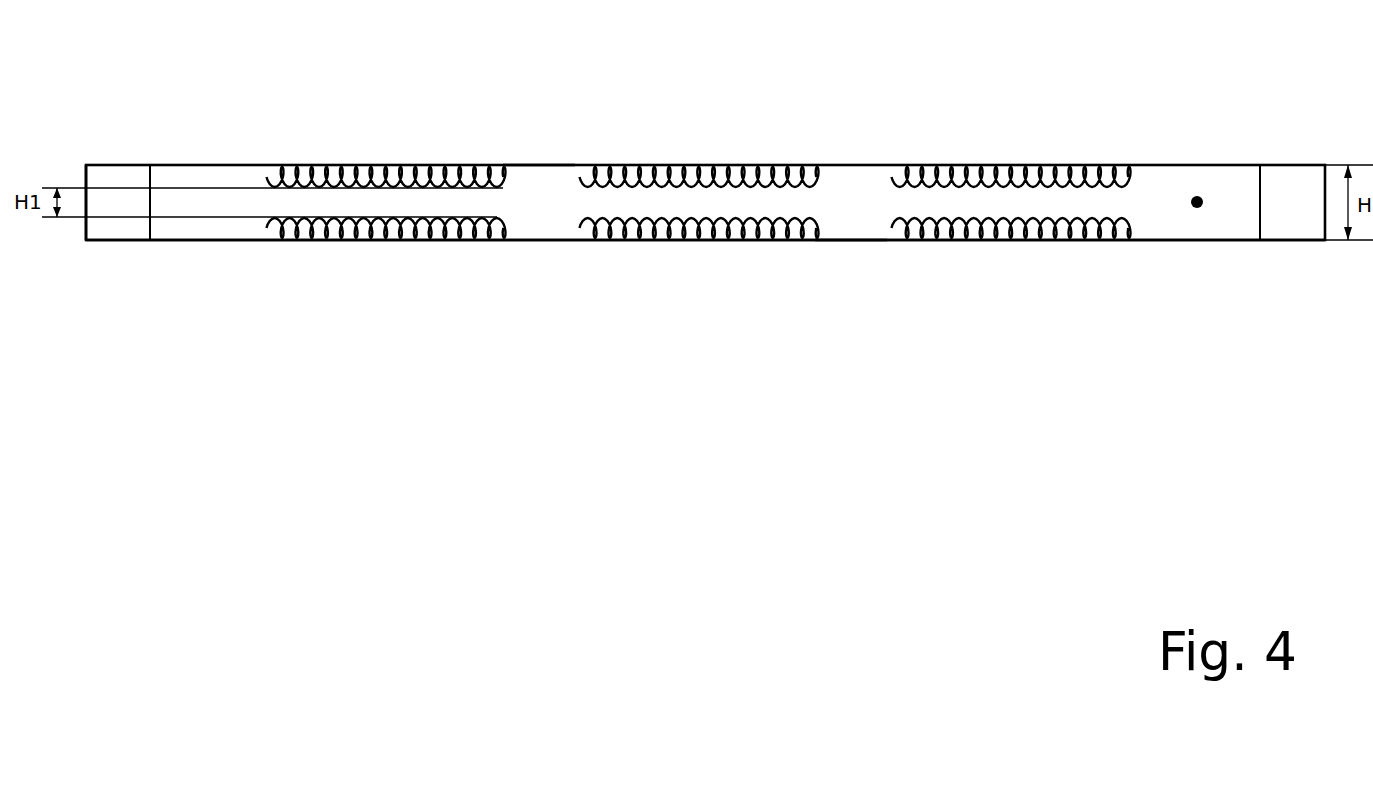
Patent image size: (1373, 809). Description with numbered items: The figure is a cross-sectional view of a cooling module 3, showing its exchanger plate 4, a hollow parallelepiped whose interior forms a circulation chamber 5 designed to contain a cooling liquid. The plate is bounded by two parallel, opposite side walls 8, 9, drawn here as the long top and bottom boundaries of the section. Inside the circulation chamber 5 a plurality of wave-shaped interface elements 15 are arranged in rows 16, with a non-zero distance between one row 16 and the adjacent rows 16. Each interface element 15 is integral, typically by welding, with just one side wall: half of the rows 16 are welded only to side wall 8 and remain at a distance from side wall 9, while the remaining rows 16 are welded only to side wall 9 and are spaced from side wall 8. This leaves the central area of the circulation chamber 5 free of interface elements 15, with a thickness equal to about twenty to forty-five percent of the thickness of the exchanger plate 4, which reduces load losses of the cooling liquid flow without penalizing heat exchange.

The cooling module 3 is at (462, 364).
The exchanger plate 4 is at (551, 88).
The circulation chamber 5 is at (1198, 195).
The side wall 8 is at (1212, 241).
The side wall 9 is at (216, 165).
The interface element 15 is at (364, 166).
The row 16 is at (750, 142).